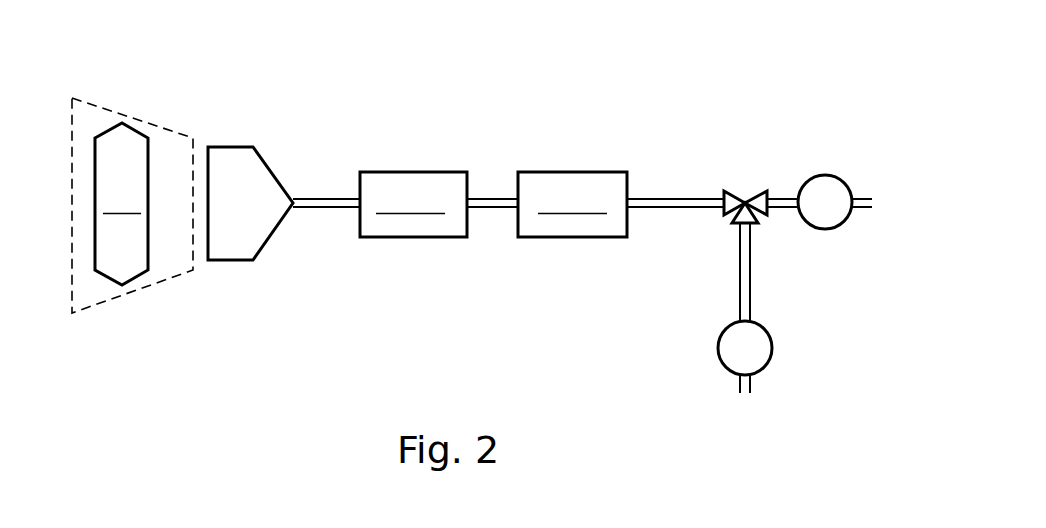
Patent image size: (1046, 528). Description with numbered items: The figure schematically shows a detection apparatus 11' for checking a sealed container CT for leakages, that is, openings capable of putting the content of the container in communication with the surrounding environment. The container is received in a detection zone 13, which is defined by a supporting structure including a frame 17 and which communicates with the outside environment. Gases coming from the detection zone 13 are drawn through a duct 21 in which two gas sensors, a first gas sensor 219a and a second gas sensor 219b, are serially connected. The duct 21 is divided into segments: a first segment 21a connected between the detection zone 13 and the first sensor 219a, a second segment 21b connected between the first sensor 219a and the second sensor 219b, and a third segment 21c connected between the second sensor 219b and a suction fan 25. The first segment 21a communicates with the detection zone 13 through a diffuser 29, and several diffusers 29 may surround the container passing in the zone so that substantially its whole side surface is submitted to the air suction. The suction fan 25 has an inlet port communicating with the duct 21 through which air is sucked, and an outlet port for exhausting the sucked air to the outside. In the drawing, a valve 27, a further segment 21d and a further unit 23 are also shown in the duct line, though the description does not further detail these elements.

The frame 17 is at (70, 118).
The detection zone 13 is at (87, 277).
The diffuser 29 is at (236, 142).
The duct 21 is at (320, 194).
The first gas sensor 219a is at (413, 204).
The second gas sensor 219b is at (572, 204).
The first segment 21a is at (490, 209).
The second segment 21b is at (683, 197).
The three-way valve 27 is at (746, 189).
The third segment 21c is at (740, 263).
The first source / pump 23 is at (719, 348).
The line section 21d is at (787, 197).
The suction fan 25 is at (828, 230).
The delivery system 11' is at (540, 224).